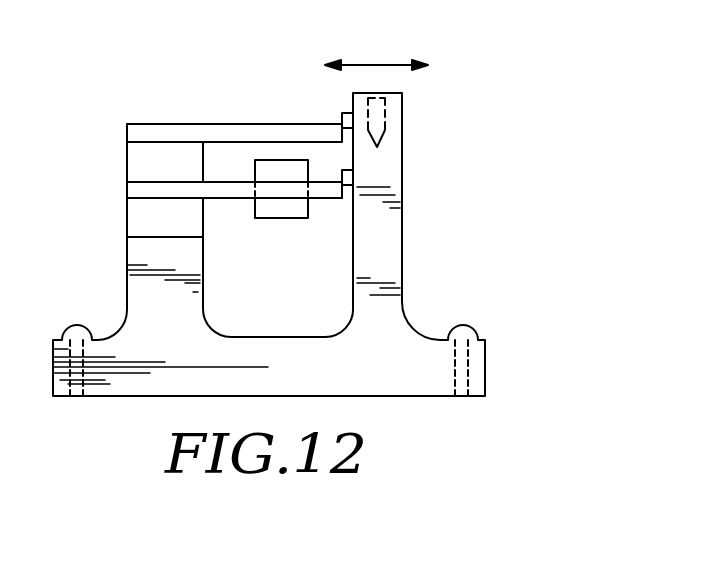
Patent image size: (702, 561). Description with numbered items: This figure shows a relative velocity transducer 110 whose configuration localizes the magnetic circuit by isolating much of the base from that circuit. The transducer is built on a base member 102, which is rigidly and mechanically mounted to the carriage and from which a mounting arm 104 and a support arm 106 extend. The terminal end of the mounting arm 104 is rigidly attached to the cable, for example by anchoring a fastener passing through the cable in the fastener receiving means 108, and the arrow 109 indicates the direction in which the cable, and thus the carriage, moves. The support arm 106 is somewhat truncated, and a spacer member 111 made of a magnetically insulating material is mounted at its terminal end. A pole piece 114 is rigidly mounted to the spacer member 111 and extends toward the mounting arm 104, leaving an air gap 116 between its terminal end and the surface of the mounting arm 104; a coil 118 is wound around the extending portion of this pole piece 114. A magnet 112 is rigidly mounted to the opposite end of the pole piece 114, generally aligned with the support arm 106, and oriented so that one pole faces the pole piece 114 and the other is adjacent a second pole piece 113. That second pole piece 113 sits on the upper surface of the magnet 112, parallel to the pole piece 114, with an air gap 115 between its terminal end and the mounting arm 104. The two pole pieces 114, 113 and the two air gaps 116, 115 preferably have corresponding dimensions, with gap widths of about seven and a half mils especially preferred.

The base member 102 is at (337, 373).
The mounting arm 104 is at (403, 258).
The support arm 106 is at (207, 305).
The fastener receiving means 108 is at (387, 123).
The arrow 109 is at (373, 62).
The relative transducer 110 is at (458, 294).
The spacer member 111 is at (140, 217).
The magnet 112 is at (140, 161).
The second pole piece 113 is at (177, 132).
The pole piece 114 is at (228, 190).
The air gap 115 is at (347, 112).
The air gap 116 is at (350, 168).
The coil 118 is at (292, 208).